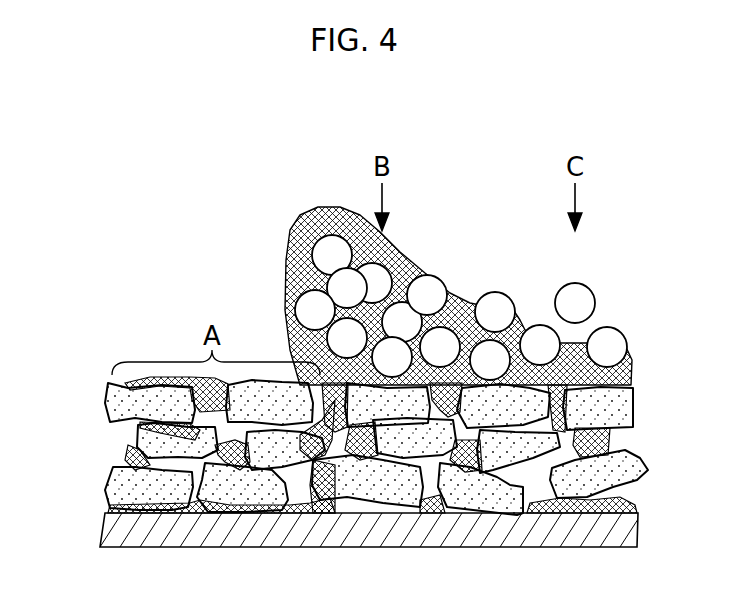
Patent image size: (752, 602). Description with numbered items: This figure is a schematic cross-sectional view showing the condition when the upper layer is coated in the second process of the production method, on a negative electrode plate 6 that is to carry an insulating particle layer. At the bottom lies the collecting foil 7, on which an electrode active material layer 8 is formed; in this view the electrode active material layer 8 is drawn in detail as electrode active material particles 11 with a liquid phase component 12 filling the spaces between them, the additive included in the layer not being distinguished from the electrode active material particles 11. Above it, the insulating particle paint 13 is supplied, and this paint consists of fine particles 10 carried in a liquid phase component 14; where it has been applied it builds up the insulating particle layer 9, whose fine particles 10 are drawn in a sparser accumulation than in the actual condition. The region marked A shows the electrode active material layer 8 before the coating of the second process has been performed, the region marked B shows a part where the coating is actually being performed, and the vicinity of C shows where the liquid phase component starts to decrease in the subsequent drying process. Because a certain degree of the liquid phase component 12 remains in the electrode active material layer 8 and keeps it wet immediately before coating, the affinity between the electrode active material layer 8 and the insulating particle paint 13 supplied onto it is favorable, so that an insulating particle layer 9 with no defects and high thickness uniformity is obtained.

The negative electrode plate 6 is at (459, 270).
The collecting foil 7 is at (627, 518).
The electrode active material layer 8 is at (368, 446).
The insulating particle layer 9 is at (422, 295).
The fine particles 10 is at (325, 244).
The electrode active material particles 11 is at (628, 462).
The liquid phase component 12 is at (628, 435).
The insulating particle paint 13 is at (396, 293).
The liquid phase component 14 is at (290, 283).